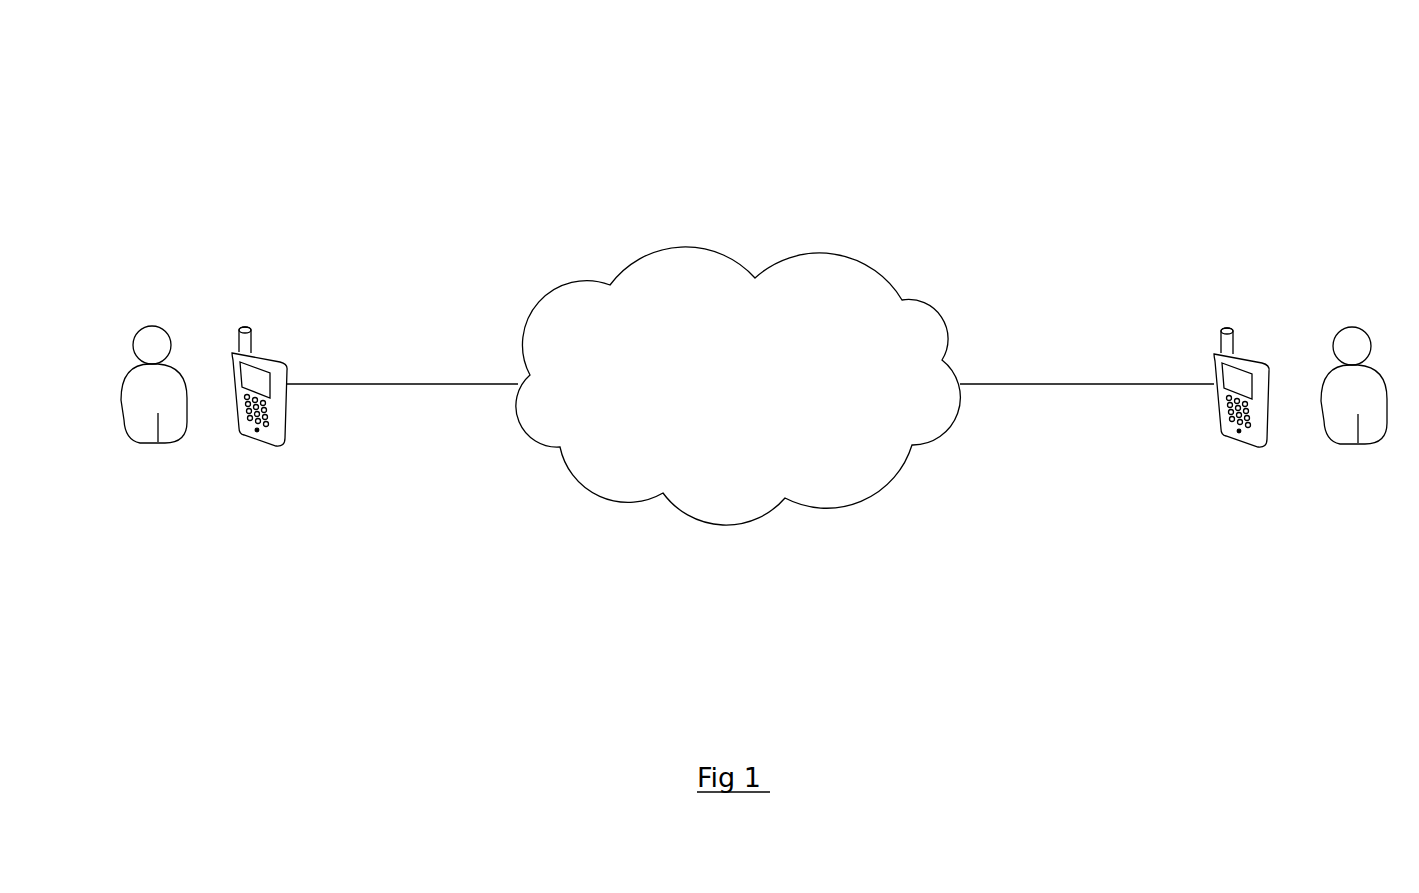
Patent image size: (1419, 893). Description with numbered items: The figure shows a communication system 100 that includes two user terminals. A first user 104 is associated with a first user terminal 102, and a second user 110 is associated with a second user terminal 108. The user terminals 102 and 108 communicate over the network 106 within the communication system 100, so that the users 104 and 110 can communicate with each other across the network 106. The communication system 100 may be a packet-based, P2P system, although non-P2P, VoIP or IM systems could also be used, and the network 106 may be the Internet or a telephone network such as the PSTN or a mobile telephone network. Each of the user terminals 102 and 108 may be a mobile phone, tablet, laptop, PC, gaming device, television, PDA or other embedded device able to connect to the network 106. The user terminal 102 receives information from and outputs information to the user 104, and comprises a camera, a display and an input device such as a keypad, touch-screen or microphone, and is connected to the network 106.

The communication system 100 is at (373, 152).
The first user terminal 102 is at (273, 353).
The first user 104 is at (153, 324).
The network 106 is at (833, 256).
The second user terminal 108 is at (1247, 351).
The second user 110 is at (1353, 327).